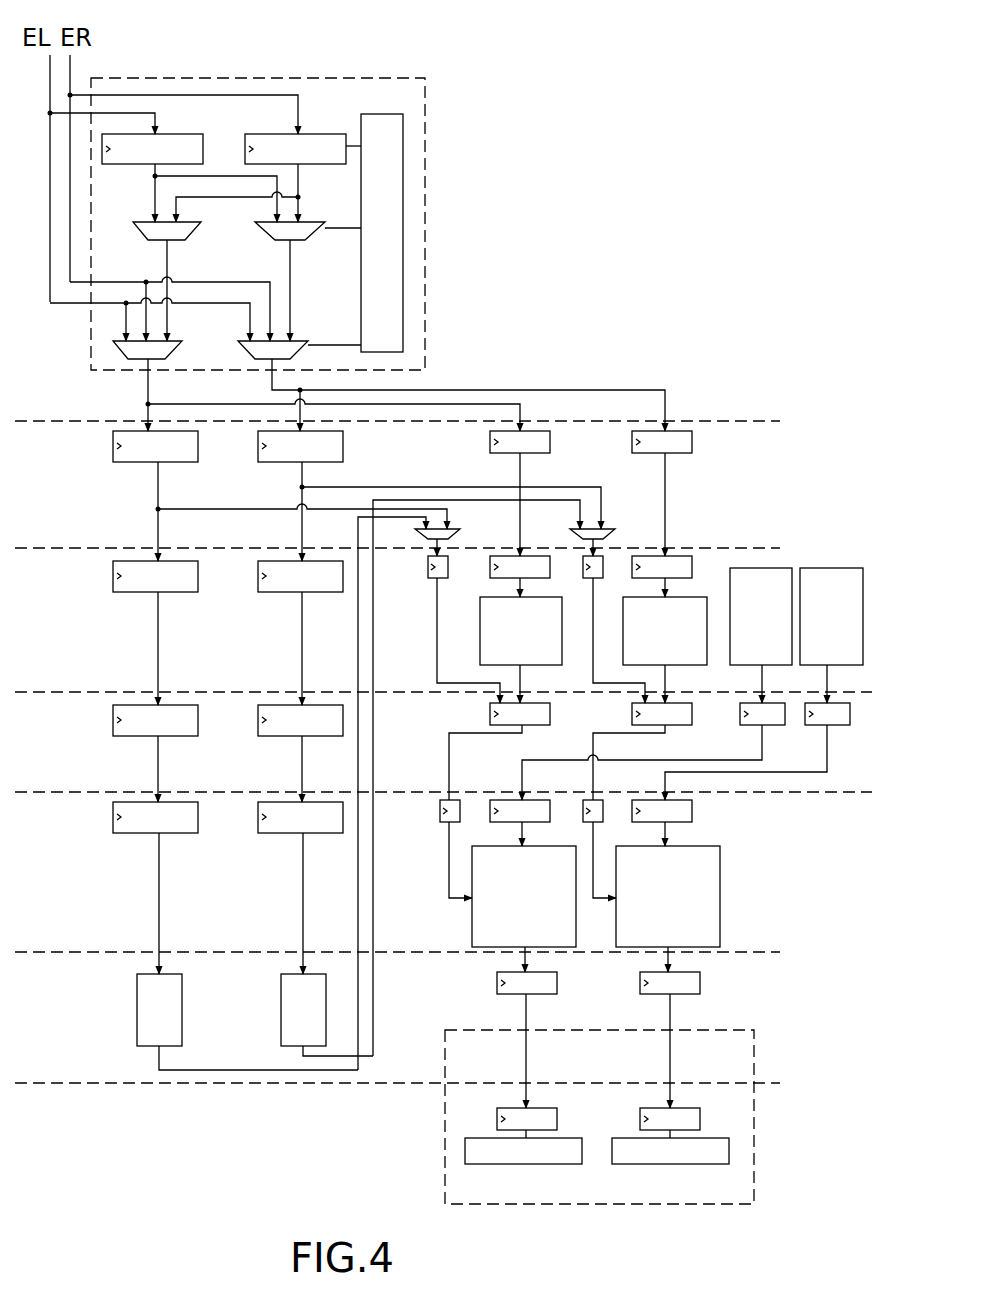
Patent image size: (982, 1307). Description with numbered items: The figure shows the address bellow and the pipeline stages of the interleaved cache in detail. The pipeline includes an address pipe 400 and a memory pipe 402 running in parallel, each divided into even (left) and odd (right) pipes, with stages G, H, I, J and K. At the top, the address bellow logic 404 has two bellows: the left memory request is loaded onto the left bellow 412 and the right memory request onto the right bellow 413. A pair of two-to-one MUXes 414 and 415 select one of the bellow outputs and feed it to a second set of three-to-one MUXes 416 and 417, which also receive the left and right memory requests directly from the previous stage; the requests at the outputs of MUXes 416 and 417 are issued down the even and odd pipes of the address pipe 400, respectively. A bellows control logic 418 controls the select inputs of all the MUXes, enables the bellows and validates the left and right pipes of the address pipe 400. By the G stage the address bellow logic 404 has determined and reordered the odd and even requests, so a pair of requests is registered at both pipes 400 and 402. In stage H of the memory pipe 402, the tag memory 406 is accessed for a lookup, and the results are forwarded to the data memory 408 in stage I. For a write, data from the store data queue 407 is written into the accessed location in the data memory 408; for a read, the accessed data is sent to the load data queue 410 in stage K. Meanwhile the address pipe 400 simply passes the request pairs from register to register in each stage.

The address pipe 400 is at (198, 60).
The memory pipe 402 is at (593, 266).
The address bellow logic 404 is at (325, 78).
The tag memory 406 is at (480, 632).
The store data queue 407 is at (827, 568).
The data memory 408 is at (472, 922).
The load data queue 410 is at (724, 1030).
The left bellow 412 is at (185, 134).
The right bellow 413 is at (328, 134).
The 2-to-1 MUX 414 is at (145, 222).
The 2-to-1 MUX 415 is at (340, 210).
The 3-to-1 MUX 416 is at (135, 360).
The 3-to-1 MUX 417 is at (288, 356).
The bellows control logic 418 is at (403, 205).